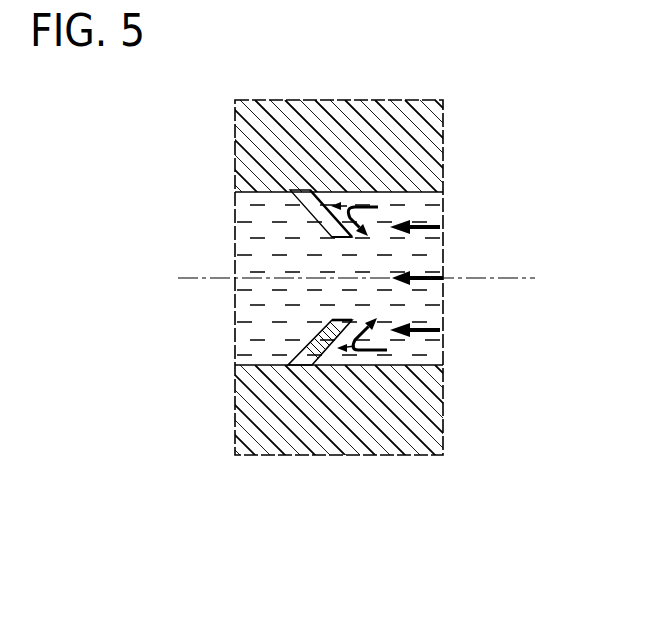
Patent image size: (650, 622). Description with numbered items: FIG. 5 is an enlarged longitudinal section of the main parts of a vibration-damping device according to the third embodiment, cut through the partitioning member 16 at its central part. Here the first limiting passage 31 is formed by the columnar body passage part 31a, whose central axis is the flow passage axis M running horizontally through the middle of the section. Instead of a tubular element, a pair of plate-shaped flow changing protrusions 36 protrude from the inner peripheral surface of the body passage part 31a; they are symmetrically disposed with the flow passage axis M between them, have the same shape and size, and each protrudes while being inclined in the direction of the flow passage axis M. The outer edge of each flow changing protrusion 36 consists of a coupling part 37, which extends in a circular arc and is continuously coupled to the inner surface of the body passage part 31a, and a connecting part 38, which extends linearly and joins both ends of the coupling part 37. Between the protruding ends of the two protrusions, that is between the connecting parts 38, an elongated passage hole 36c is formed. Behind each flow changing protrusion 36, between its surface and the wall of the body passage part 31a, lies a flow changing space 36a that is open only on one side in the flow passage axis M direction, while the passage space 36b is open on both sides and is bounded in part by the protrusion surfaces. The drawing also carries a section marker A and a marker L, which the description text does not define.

The partitioning member 16 is at (293, 467).
The first limiting passage 31 is at (340, 405).
The body passage part 31a is at (272, 365).
The flow changing protrusion 36 is at (266, 205).
The coupling part 37 is at (308, 190).
The connecting part 38 is at (332, 239).
The flow changing space 36a is at (336, 208).
The passage space 36b is at (335, 296).
The passage hole 36c is at (356, 240).
The flow passage axis M is at (512, 278).
The flow direction L is at (360, 362).
The section line A is at (355, 68).